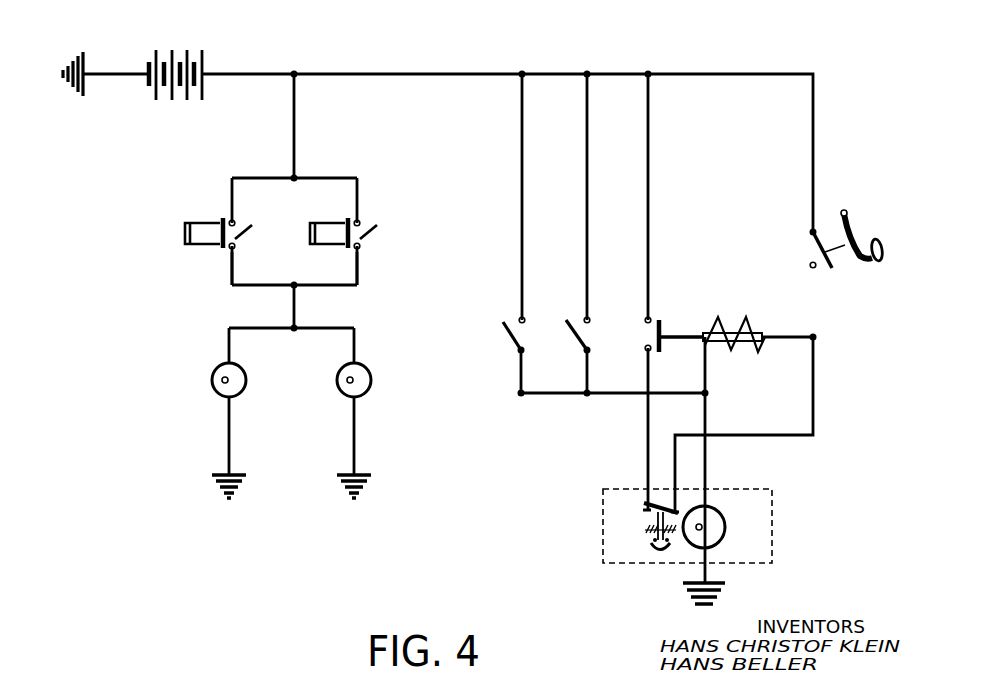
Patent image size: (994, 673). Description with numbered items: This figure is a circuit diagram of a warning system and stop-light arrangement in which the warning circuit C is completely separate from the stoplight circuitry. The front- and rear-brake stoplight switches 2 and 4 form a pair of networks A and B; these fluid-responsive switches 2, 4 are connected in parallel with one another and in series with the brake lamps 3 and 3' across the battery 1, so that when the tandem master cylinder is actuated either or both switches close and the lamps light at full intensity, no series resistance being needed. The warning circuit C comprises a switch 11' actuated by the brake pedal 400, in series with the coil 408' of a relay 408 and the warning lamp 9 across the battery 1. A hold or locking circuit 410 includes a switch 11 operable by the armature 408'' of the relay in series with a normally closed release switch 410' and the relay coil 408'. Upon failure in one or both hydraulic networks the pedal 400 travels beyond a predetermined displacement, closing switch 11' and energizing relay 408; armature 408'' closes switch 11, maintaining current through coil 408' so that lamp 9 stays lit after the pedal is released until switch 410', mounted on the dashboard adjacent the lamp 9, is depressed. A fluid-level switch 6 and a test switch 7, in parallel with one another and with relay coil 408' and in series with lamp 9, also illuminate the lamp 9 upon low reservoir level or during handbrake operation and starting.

The battery 1 is at (175, 102).
The front-brake stoplight switch 2 is at (226, 233).
The rear-brake stoplight switch 4 is at (351, 233).
The stoplight network A is at (230, 268).
The stoplight network B is at (358, 277).
The brake lamp 3 is at (207, 430).
The brake lamp 3' is at (371, 430).
The test switch 7 is at (516, 317).
The fluid-level switch 6 is at (584, 318).
The switch 11 is at (676, 321).
The switch 11' is at (842, 271).
The brake pedal 400 is at (856, 229).
The relay 408 is at (755, 374).
The relay coil 408' is at (745, 317).
The armature 408'' is at (714, 367).
The warning circuit C is at (607, 565).
The hold or locking circuit 410 is at (617, 478).
The release switch 410' is at (647, 559).
The warning lamp 9 is at (728, 528).